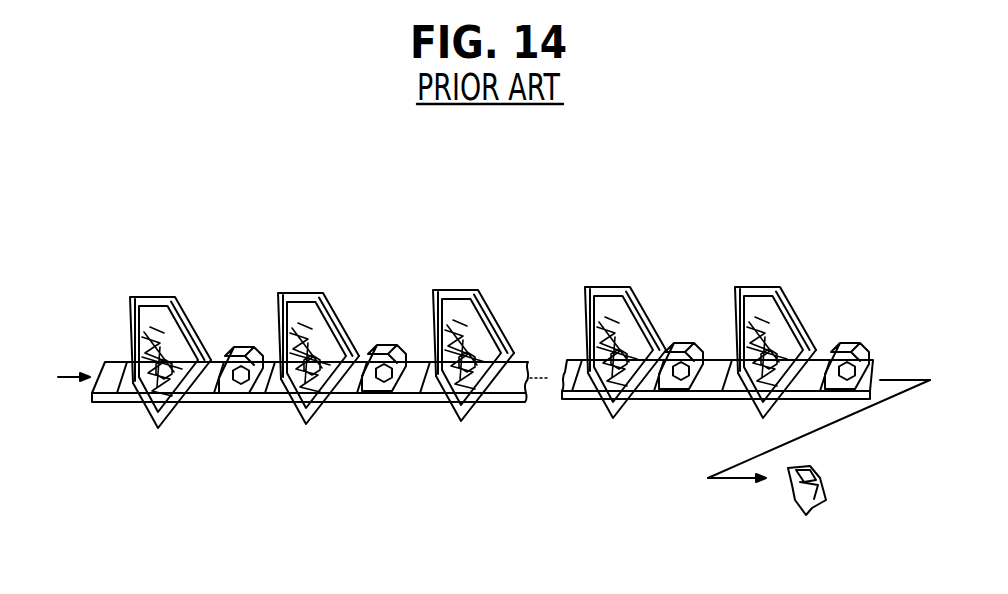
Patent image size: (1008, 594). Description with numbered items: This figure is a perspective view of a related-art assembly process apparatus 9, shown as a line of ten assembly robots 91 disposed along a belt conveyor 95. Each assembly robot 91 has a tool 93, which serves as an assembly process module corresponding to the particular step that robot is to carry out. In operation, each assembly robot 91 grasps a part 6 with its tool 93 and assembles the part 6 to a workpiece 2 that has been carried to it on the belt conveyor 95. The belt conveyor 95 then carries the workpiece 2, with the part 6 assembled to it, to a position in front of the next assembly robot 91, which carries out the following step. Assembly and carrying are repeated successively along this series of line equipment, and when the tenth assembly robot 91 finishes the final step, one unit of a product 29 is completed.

The assembly process apparatus 9 is at (478, 212).
The assembly robot 91 is at (290, 295).
The tool 93 is at (320, 423).
The belt conveyor 95 is at (105, 385).
The part 6 is at (175, 343).
The workpiece 2 is at (195, 400).
The product 29 is at (825, 480).